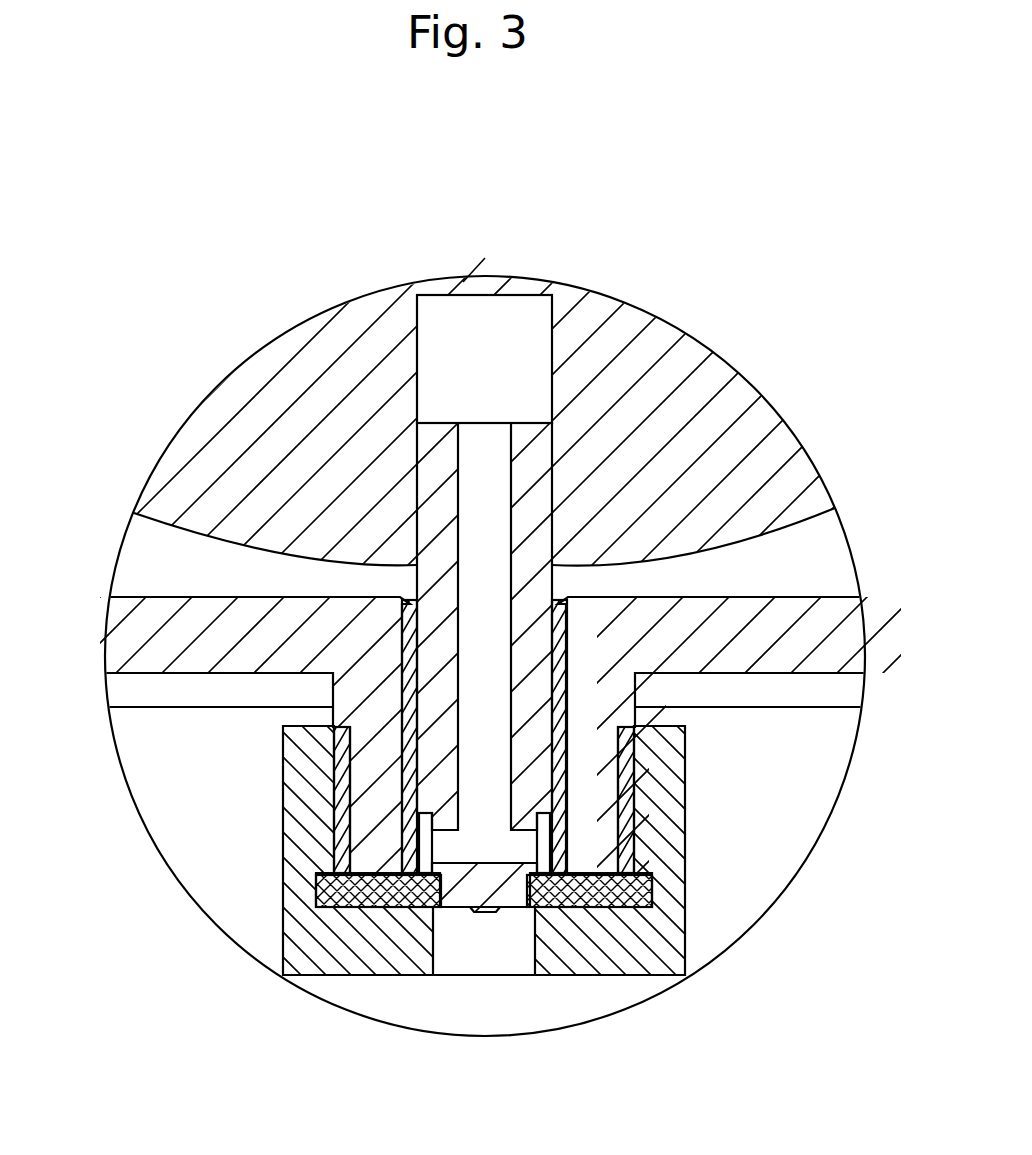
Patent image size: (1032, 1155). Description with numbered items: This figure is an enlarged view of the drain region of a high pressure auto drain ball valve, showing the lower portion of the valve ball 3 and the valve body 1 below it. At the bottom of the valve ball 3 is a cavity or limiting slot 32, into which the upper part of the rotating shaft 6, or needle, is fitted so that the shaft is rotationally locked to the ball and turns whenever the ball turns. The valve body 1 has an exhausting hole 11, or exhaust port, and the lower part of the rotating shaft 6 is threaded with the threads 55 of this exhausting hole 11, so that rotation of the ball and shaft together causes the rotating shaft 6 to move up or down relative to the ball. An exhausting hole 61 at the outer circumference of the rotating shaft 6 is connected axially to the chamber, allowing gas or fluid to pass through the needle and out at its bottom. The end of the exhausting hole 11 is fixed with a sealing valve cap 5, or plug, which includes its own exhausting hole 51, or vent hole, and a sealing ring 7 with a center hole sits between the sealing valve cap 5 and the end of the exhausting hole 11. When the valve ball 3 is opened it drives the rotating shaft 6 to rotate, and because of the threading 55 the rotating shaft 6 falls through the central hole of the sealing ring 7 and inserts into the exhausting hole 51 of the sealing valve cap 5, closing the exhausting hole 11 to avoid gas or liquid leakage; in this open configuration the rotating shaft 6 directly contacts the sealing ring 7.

The valve body 1 is at (142, 637).
The valve ball 3 is at (628, 450).
The cavity or limiting slot 32 is at (487, 357).
The rotating shaft 6 is at (433, 480).
The exhausting hole 61 is at (483, 828).
The threads 55 is at (560, 620).
The exhausting hole 11 is at (541, 820).
The sealing valve cap 5 is at (655, 810).
The sealing ring 7 is at (605, 900).
The exhausting hole 51 is at (505, 938).